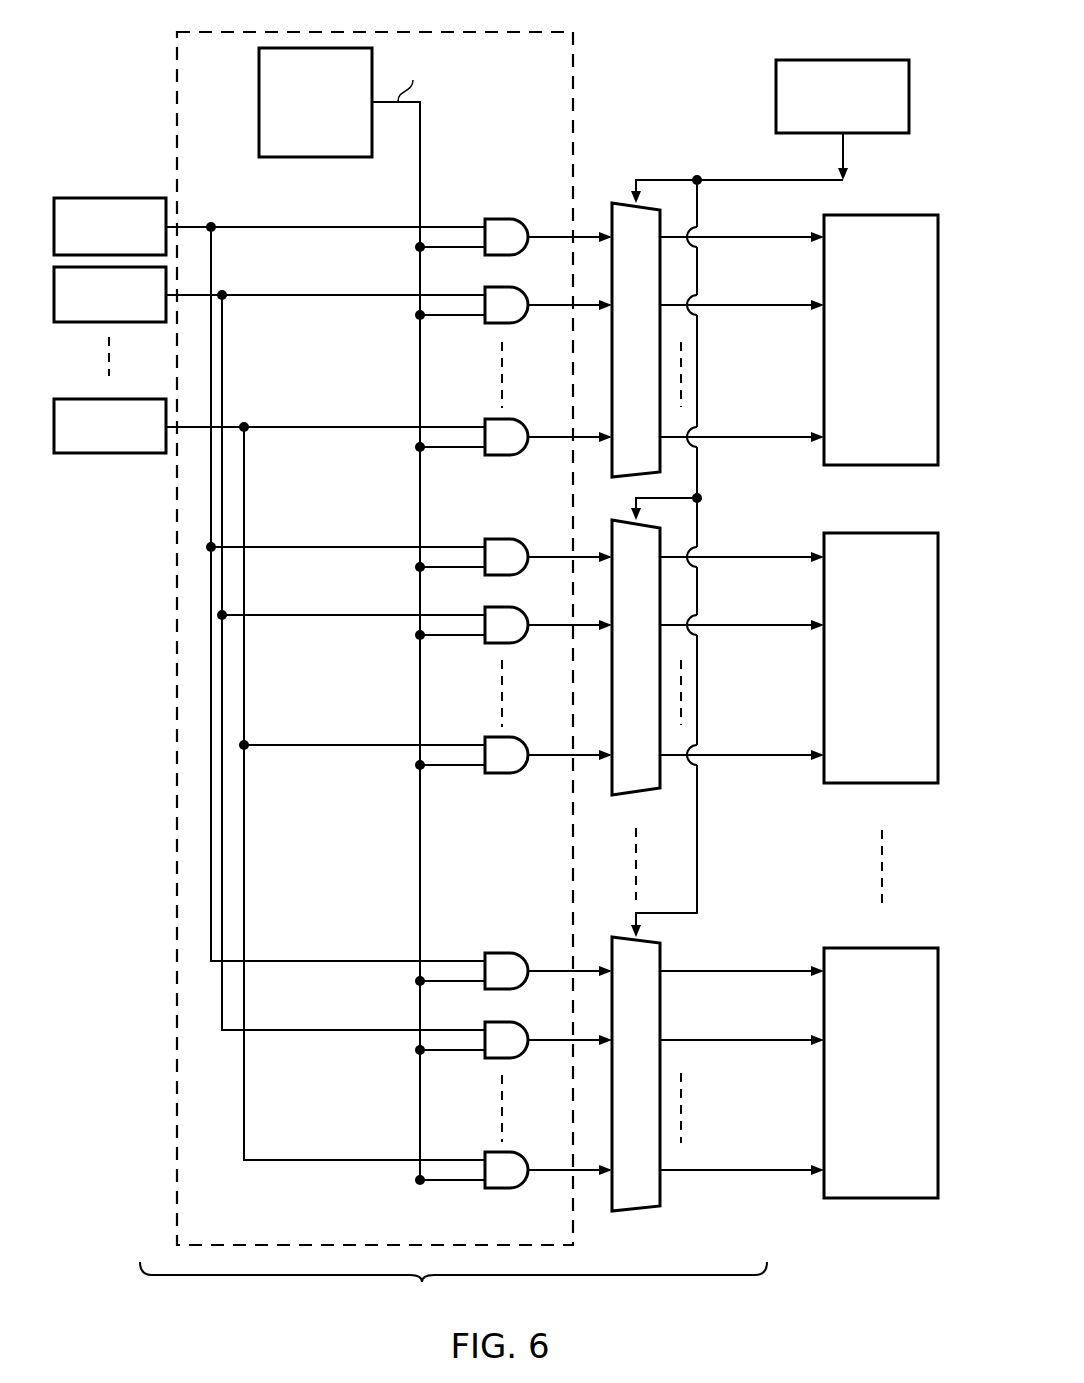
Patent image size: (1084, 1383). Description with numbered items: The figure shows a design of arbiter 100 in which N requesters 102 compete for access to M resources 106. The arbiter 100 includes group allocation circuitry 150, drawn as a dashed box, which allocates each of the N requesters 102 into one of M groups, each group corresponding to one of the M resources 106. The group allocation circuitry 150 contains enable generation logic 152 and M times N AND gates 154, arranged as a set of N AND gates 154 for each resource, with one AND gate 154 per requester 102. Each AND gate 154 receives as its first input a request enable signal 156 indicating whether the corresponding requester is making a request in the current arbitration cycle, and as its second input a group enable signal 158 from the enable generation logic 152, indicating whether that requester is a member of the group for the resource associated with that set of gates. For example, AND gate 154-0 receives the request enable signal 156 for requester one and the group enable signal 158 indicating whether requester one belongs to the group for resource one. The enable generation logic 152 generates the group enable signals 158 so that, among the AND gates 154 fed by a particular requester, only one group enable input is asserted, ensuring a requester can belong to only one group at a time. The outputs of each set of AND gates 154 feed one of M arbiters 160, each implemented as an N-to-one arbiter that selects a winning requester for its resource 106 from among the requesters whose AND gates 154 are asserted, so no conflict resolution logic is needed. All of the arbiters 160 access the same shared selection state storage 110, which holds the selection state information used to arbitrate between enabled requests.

The arbiter 100 is at (453, 1290).
The requesters 102 is at (102, 210).
The resources 106 is at (888, 235).
The selection state storage 110 is at (843, 60).
The group allocation circuitry 150 is at (174, 694).
The enable generation logic 152 is at (328, 158).
The AND gates 154 is at (518, 333).
The AND gate 154-0 is at (500, 220).
The request enable signal 156 is at (312, 229).
The group enable signal 158 is at (457, 250).
The arbiters 160 is at (660, 290).